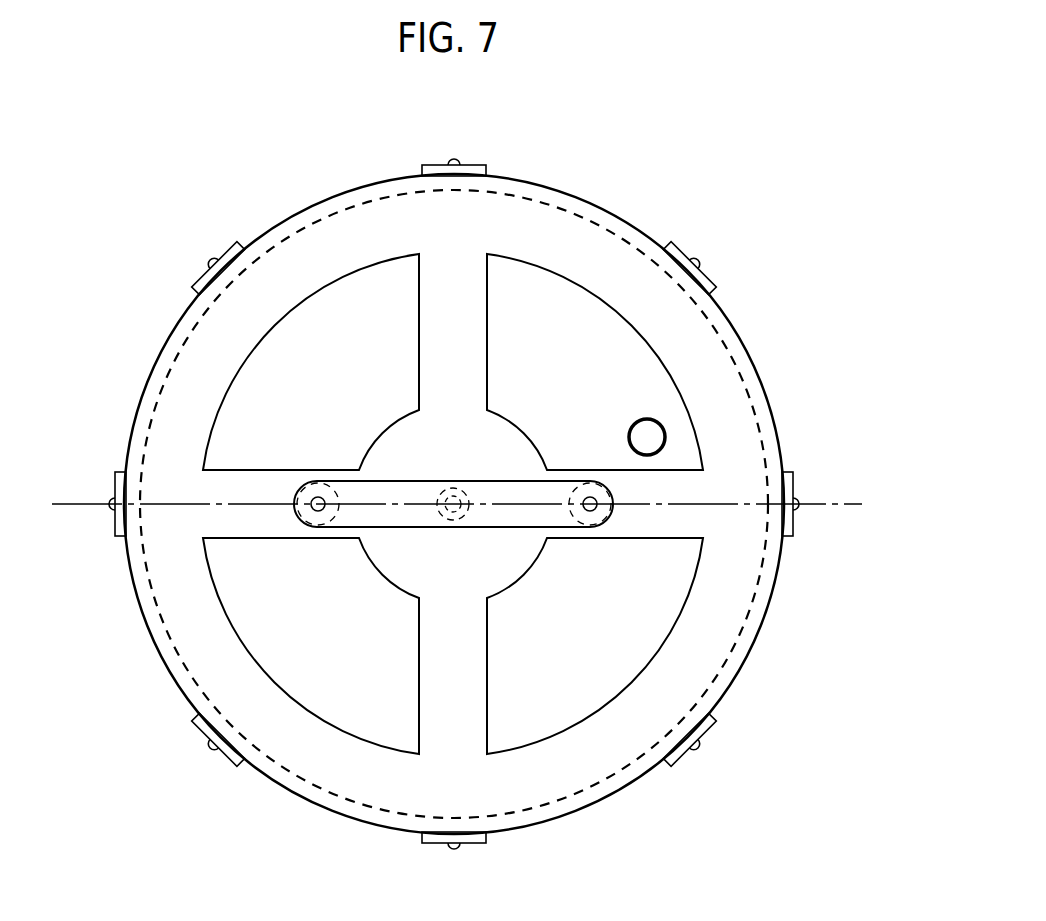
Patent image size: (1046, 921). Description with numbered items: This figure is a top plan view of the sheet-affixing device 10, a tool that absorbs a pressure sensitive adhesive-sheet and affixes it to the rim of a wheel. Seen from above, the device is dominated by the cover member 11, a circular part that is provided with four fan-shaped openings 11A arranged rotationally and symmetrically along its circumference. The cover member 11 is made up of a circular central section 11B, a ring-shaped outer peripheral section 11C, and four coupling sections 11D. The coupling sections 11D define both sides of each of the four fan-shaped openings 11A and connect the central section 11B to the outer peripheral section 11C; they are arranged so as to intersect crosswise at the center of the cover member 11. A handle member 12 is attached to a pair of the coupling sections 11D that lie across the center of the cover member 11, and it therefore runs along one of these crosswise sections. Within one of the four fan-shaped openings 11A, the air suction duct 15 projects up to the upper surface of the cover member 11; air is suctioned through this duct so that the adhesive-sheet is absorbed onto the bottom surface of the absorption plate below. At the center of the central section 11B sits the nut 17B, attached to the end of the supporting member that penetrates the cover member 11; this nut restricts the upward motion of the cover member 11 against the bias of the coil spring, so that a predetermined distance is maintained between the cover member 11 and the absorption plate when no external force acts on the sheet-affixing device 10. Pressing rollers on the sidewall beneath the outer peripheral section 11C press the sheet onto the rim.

The sheet-affixing device 10 is at (453, 534).
The cover member 11 is at (634, 227).
The fan-shaped openings 11A is at (351, 388).
The central section 11B is at (402, 556).
The outer peripheral section 11C is at (711, 368).
The coupling sections 11D is at (457, 499).
The handle member 12 is at (420, 492).
The air suction duct 15 is at (628, 438).
The nut 17B is at (453, 527).